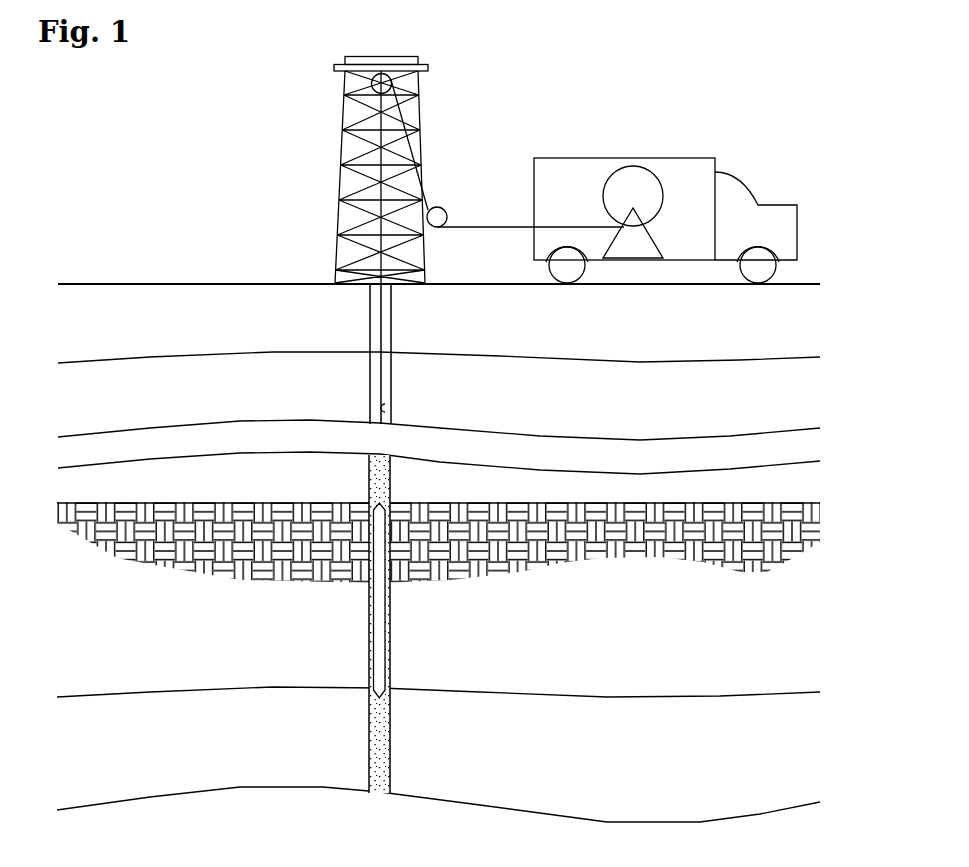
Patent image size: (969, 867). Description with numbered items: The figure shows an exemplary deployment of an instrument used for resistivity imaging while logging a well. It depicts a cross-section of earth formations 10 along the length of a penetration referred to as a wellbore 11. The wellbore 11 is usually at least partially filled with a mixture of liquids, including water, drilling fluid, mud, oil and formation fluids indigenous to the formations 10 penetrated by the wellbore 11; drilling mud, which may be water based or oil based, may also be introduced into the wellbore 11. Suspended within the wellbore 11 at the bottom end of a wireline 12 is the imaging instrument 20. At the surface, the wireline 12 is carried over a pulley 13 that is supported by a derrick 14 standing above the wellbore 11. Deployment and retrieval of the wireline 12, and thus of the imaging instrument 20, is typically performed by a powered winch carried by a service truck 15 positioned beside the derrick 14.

The earth formations 10 is at (621, 412).
The wellbore 11 is at (387, 378).
The wireline 12 is at (389, 413).
The pulley 13 is at (377, 83).
The derrick 14 is at (335, 230).
The service truck 15 is at (681, 159).
The imaging instrument 20 is at (380, 663).